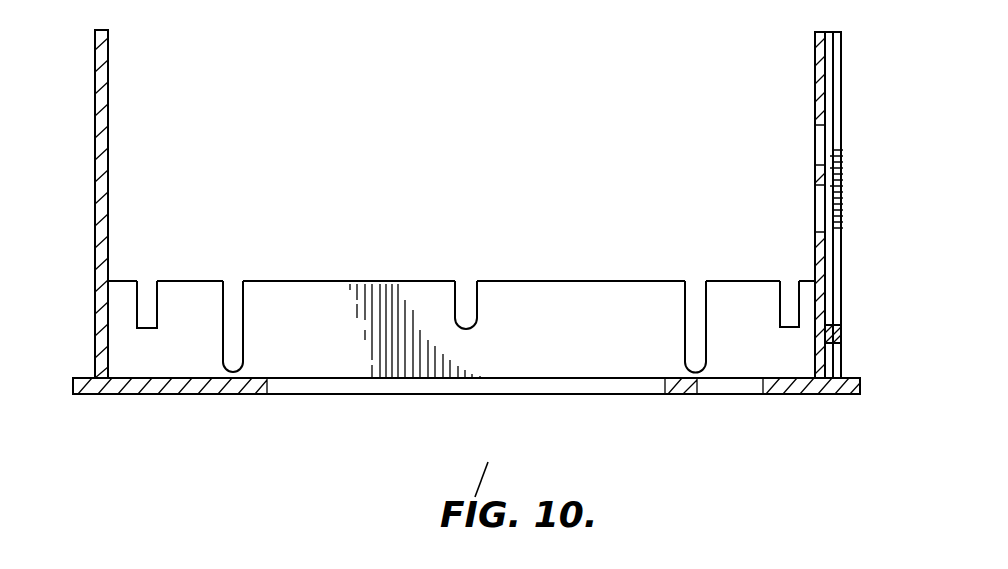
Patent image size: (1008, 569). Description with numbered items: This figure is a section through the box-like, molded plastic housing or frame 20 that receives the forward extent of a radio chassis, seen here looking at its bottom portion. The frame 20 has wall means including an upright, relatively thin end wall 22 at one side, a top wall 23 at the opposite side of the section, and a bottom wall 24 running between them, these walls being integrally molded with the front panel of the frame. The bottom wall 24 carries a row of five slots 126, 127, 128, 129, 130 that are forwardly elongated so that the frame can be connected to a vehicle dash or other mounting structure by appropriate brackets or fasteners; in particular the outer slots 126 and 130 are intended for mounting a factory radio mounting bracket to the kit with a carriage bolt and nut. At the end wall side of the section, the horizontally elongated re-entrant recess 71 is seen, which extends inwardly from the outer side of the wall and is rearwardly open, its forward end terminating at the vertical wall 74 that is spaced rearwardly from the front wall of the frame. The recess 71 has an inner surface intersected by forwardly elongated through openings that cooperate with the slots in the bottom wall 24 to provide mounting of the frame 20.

The housing or frame 20 is at (216, 406).
The end wall 22 is at (95, 120).
The top wall 23 is at (825, 73).
The bottom wall 24 is at (461, 329).
The re-entrant recess 71 is at (838, 272).
The vertical wall 74 is at (838, 325).
The slot 126 is at (157, 289).
The slot 127 is at (228, 287).
The slot 128 is at (460, 290).
The slot 129 is at (690, 286).
The slot 130 is at (782, 286).